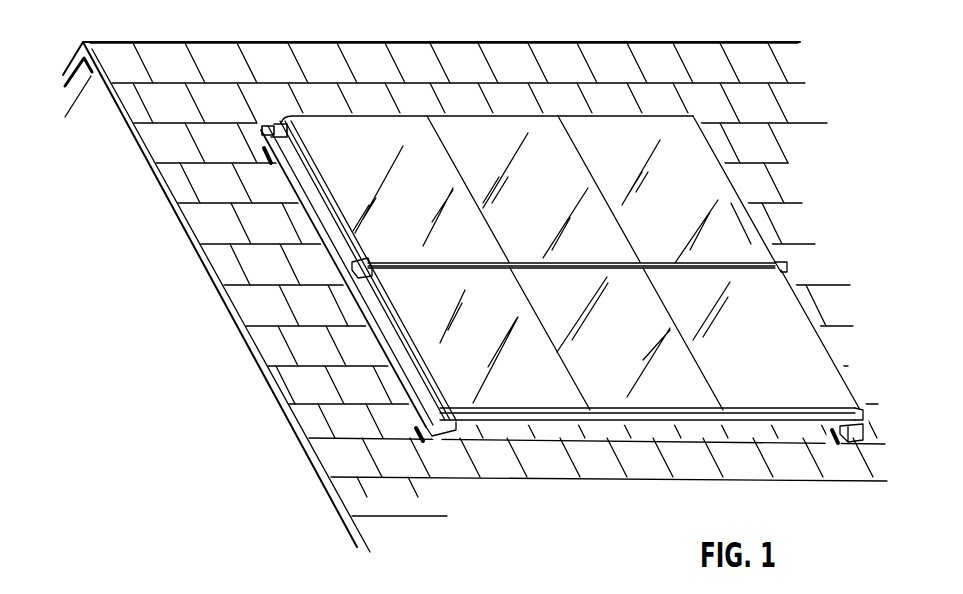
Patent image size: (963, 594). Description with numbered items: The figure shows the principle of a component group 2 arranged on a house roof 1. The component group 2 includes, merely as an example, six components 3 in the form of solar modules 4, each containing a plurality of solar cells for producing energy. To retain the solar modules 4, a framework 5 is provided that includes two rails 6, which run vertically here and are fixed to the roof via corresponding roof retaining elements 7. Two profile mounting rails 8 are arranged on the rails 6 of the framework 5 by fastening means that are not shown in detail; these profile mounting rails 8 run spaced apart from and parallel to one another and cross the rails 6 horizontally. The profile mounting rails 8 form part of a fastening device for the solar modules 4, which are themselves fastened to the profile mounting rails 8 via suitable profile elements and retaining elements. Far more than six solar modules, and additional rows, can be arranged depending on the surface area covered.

The house roof 1 is at (793, 73).
The component group 2 is at (750, 202).
The component 3 is at (733, 248).
The solar module 4 is at (419, 203).
The framework 5 is at (499, 429).
The rail 6 is at (375, 333).
The roof retaining element 7 is at (263, 152).
The profile mounting rail 8 is at (280, 124).